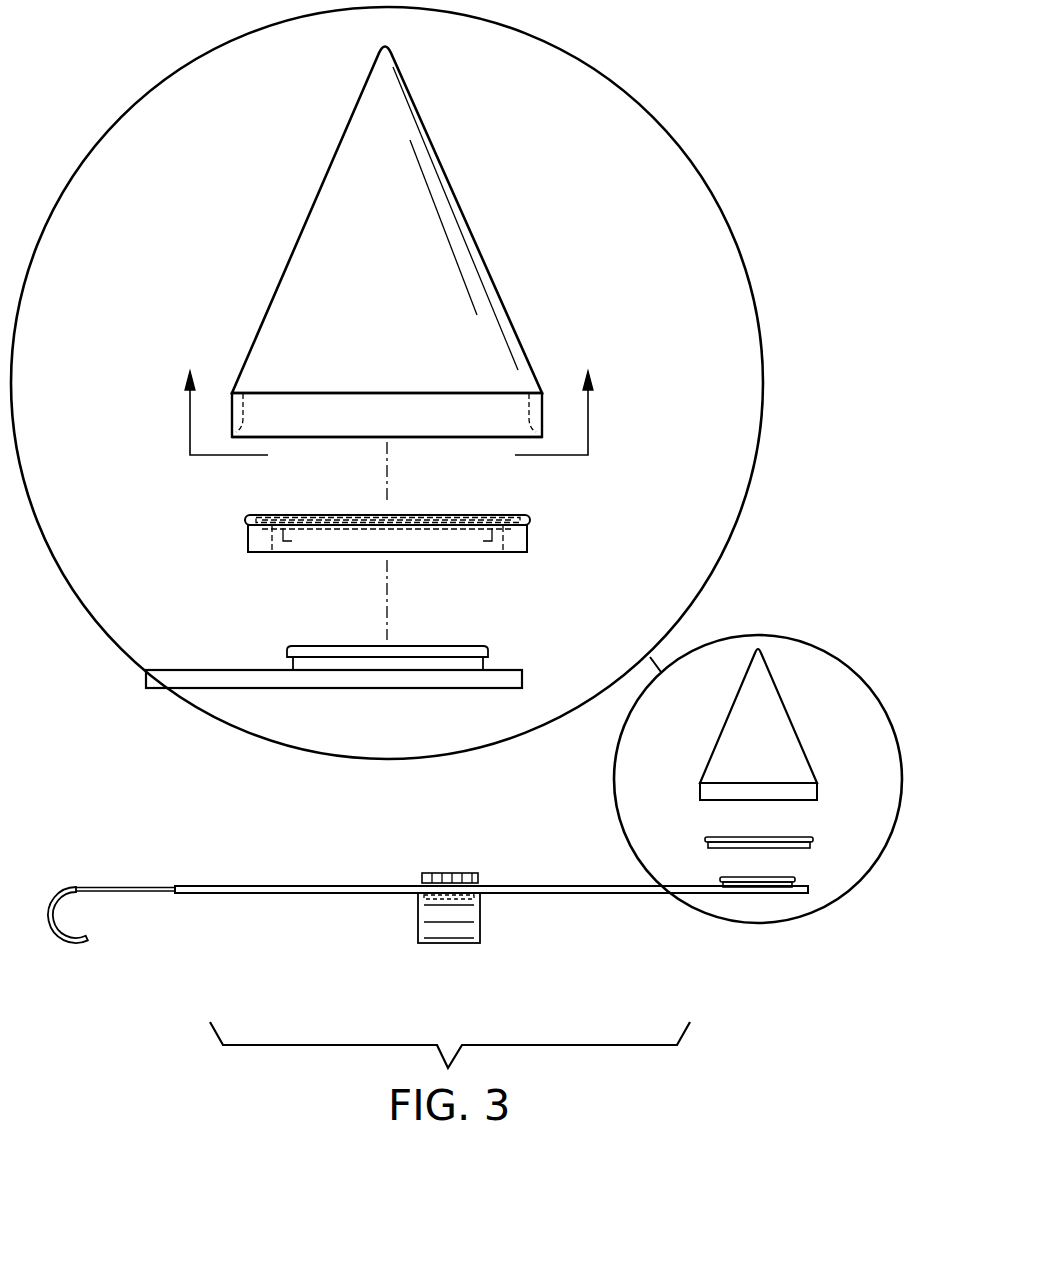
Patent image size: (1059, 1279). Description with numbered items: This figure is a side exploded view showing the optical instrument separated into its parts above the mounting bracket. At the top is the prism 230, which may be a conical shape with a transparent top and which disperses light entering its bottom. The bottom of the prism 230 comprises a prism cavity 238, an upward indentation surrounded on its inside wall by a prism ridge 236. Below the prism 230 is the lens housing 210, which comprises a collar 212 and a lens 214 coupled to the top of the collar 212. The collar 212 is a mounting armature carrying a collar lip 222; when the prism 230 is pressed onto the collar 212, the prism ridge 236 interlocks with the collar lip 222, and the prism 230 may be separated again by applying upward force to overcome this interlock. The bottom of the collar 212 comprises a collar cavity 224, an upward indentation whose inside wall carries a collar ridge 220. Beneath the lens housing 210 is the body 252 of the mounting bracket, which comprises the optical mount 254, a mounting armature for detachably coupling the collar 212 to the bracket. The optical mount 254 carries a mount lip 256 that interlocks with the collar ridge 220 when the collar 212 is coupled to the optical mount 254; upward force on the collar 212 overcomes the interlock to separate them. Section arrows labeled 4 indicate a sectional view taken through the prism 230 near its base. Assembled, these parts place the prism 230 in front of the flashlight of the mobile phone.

The prism 230 is at (133, 58).
The section line 4- 4 is at (385, 391).
The prism ridge 236 is at (244, 425).
The prism cavity 238 is at (431, 422).
The lens housing 210 is at (133, 518).
The collar lip 222 is at (530, 521).
The lens 214 is at (325, 521).
The collar ridge 220 is at (488, 547).
The collar 212 is at (256, 539).
The collar cavity 224 is at (333, 541).
The mount lip 256 is at (492, 647).
The body 252 is at (226, 676).
The optical mount 254 is at (360, 665).